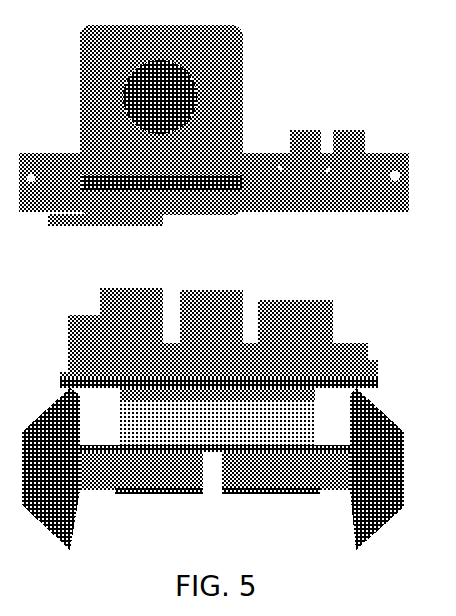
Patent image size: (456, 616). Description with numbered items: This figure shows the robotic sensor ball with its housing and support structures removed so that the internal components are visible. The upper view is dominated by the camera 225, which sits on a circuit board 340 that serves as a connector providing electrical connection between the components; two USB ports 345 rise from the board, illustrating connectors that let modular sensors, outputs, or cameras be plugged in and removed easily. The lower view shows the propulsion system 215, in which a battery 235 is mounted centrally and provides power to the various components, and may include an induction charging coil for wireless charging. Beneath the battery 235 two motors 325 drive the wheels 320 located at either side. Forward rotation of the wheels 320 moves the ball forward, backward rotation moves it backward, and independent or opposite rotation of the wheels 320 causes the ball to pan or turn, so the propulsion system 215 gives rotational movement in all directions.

The propulsion system 215 is at (232, 436).
The camera 225 is at (241, 62).
The battery 235 is at (313, 408).
The wheels 320 is at (32, 513).
The motor 325 is at (163, 497).
The circuit board 340 is at (377, 380).
The USB port 345 is at (313, 130).